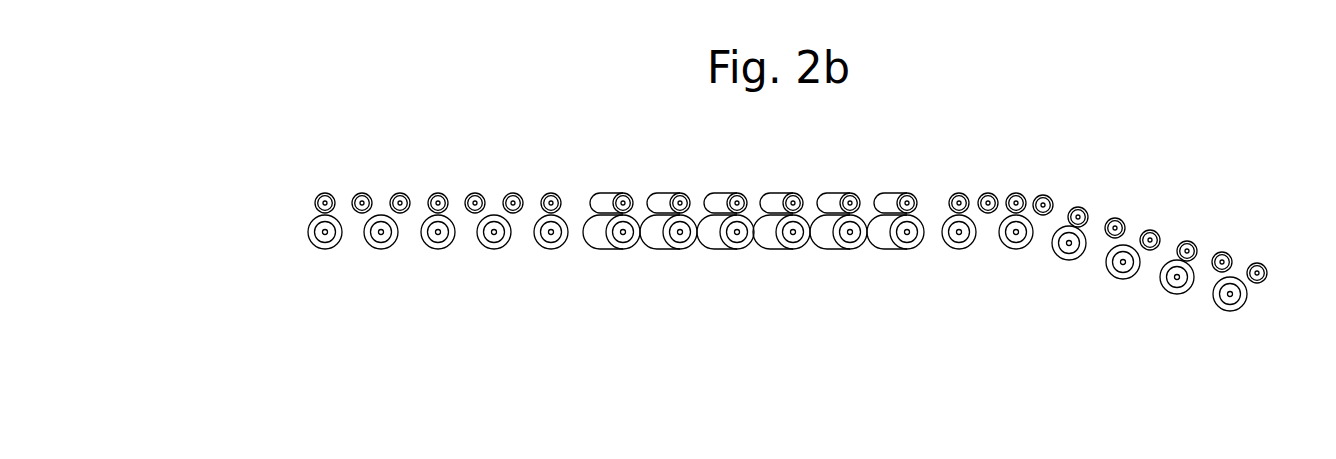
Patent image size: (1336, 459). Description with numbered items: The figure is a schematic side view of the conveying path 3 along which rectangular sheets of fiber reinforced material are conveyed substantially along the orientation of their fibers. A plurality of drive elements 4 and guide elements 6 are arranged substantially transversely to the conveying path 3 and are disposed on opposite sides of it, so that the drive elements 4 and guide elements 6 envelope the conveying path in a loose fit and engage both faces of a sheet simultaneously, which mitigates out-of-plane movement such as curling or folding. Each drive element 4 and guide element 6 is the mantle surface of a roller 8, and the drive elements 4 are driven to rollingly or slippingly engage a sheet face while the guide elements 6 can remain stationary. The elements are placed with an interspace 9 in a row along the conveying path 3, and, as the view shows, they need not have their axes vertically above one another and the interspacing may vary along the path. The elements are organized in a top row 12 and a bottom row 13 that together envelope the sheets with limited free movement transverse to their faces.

The conveying path 3 is at (787, 215).
The drive element 4 is at (559, 240).
The guide element 6 is at (484, 141).
The roller 8 is at (471, 192).
The interspace 9 is at (350, 240).
The top row 12 is at (486, 266).
The bottom row 13 is at (678, 172).